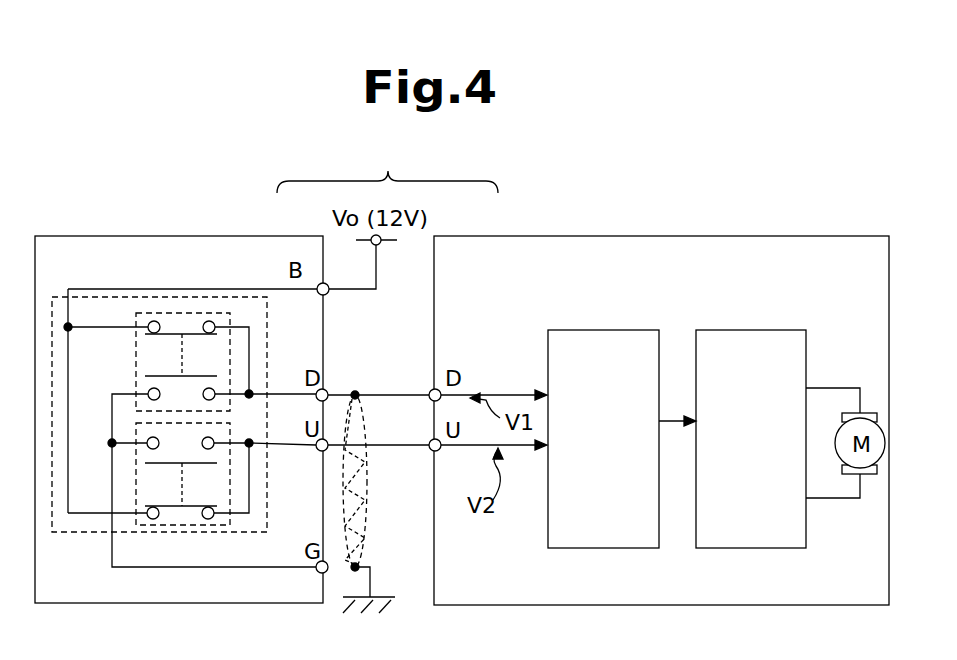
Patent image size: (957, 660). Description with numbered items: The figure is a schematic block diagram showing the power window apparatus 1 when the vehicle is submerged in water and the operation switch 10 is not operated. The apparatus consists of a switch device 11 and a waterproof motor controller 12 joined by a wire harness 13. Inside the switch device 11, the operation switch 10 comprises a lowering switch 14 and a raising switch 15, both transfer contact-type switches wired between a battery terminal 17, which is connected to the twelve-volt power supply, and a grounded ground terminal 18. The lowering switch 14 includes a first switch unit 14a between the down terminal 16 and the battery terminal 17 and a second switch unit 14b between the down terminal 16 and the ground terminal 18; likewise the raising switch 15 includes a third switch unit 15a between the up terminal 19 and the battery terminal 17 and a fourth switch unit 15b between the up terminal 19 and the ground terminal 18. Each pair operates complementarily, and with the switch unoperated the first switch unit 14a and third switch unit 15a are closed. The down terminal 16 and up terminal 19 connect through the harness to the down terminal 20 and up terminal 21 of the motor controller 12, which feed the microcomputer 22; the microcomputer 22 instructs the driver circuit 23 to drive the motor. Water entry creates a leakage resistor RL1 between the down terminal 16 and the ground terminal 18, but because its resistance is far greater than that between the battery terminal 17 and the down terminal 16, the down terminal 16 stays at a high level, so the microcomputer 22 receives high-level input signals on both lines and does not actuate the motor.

The power window apparatus 1 is at (388, 170).
The operation switch 10 is at (73, 533).
The switch device 11 is at (273, 237).
The motor controller 12 is at (488, 235).
The wire harness 13 is at (382, 390).
The lowering switch 14 is at (181, 330).
The first switch unit 14a is at (190, 324).
The second switch unit 14b is at (210, 367).
The raising switch 15 is at (172, 484).
The third switch unit 15a is at (182, 516).
The fourth switch unit 15b is at (198, 431).
The down terminal 16 is at (327, 389).
The battery terminal 17 is at (329, 294).
The ground terminal 18 is at (318, 570).
The up terminal 19 is at (322, 452).
The down terminal 20 is at (431, 389).
The up terminal 21 is at (433, 452).
The microcomputer 22 is at (547, 343).
The driver circuit 23 is at (785, 330).
The leakage resistor RL1 is at (360, 530).